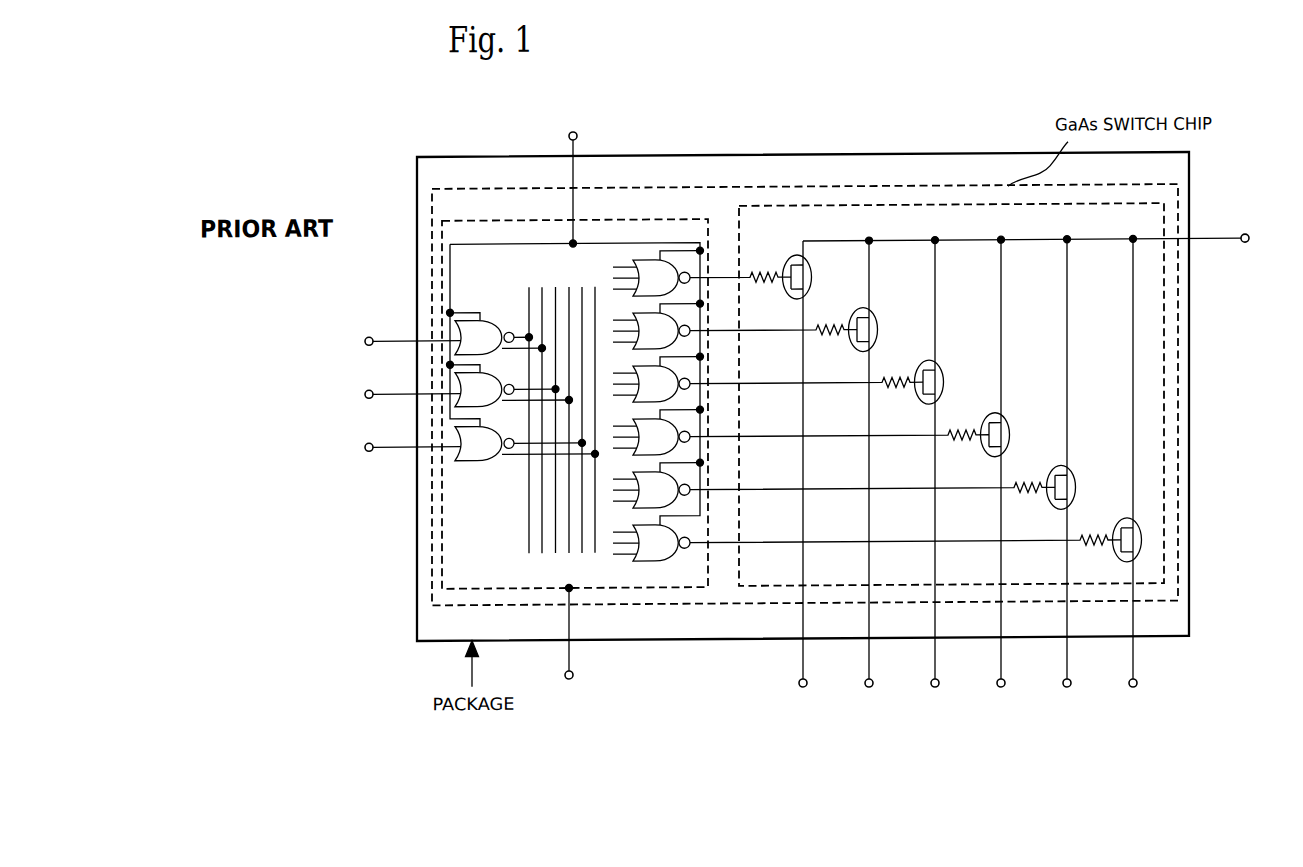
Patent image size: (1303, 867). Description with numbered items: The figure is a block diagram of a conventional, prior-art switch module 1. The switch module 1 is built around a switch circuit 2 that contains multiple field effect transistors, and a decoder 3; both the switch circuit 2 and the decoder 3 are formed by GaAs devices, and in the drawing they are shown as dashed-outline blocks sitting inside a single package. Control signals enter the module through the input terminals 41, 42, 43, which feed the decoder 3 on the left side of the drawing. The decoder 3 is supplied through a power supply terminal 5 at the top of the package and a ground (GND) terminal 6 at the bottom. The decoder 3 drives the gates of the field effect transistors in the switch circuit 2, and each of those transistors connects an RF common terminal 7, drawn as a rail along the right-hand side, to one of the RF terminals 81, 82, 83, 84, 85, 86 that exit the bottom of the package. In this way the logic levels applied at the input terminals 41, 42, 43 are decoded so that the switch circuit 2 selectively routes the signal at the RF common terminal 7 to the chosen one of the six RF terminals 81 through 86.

The switch module 1 is at (796, 76).
The switch circuit 2 is at (815, 208).
The decoder 3 is at (607, 590).
The input terminal 41 is at (366, 337).
The input terminal 42 is at (366, 390).
The input terminal 43 is at (366, 443).
The power supply terminal 5 is at (576, 134).
The ground (GND) terminal 6 is at (571, 680).
The RF common terminal 7 is at (1248, 241).
The RF terminal 81 is at (800, 688).
The RF terminal 82 is at (868, 690).
The RF terminal 83 is at (932, 689).
The RF terminal 84 is at (1000, 691).
The RF terminal 85 is at (1069, 691).
The RF terminal 86 is at (1135, 691).